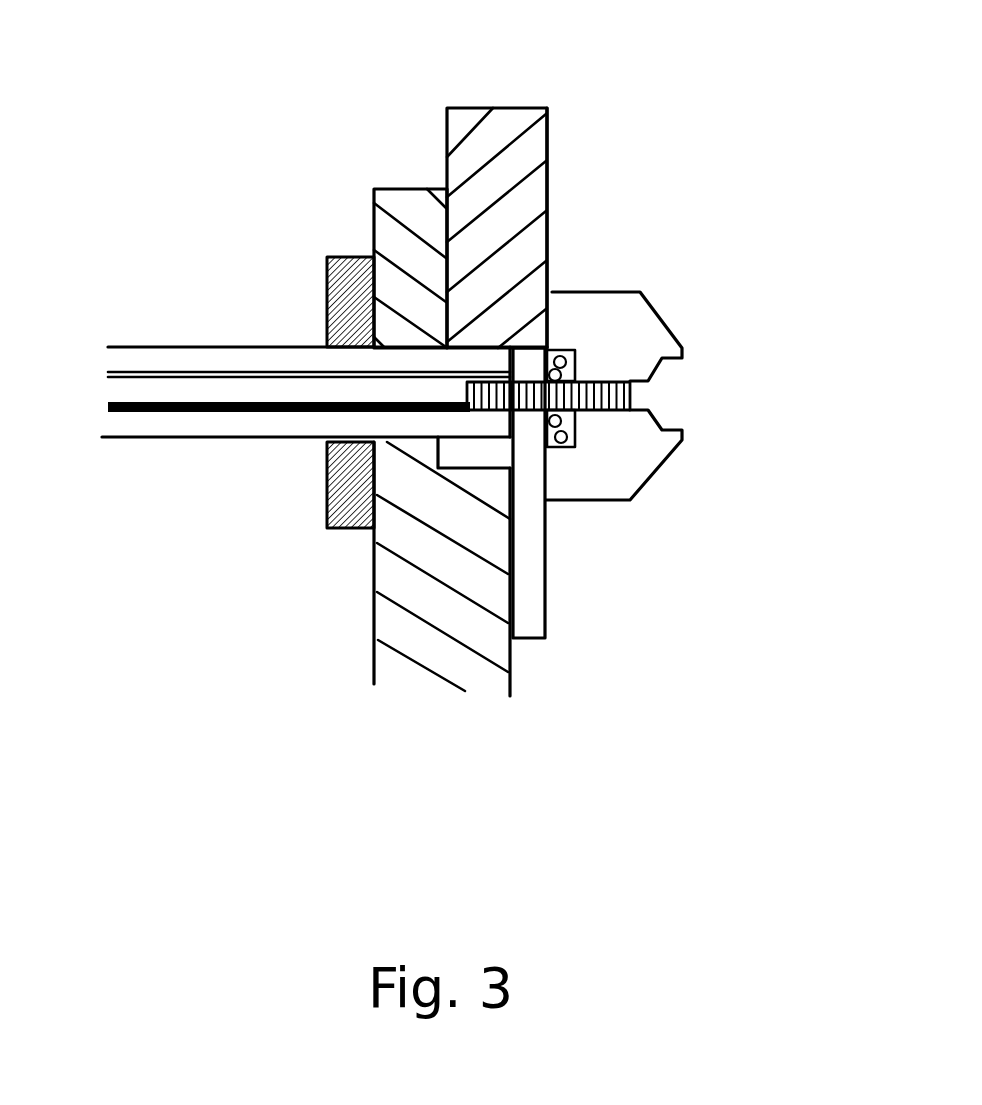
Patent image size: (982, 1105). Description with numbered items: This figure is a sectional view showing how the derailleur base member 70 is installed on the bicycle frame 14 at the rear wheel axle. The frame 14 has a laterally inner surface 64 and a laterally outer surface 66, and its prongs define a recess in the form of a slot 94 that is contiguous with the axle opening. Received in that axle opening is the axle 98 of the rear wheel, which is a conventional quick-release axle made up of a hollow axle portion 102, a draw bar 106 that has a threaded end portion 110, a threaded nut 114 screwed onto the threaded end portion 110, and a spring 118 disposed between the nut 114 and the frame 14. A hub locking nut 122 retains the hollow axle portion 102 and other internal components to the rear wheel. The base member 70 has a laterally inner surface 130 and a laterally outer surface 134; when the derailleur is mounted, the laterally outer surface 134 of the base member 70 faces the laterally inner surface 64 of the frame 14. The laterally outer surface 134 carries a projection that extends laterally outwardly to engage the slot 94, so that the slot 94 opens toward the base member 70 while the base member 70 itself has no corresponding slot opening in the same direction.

The frame 14 is at (503, 125).
The laterally inner surface 64 is at (447, 143).
The laterally outer surface 66 is at (548, 132).
The base member 70 is at (398, 585).
The slot 94 is at (528, 600).
The axle 98 is at (94, 321).
The hollow axle portion 102 is at (167, 357).
The draw bar 106 is at (245, 386).
The threaded end portion 110 is at (633, 398).
The threaded nut 114 is at (608, 310).
The spring 118 is at (573, 440).
The hub locking nut 122 is at (327, 268).
The laterally inner surface 130 is at (372, 660).
The laterally outer surface 134 is at (512, 680).